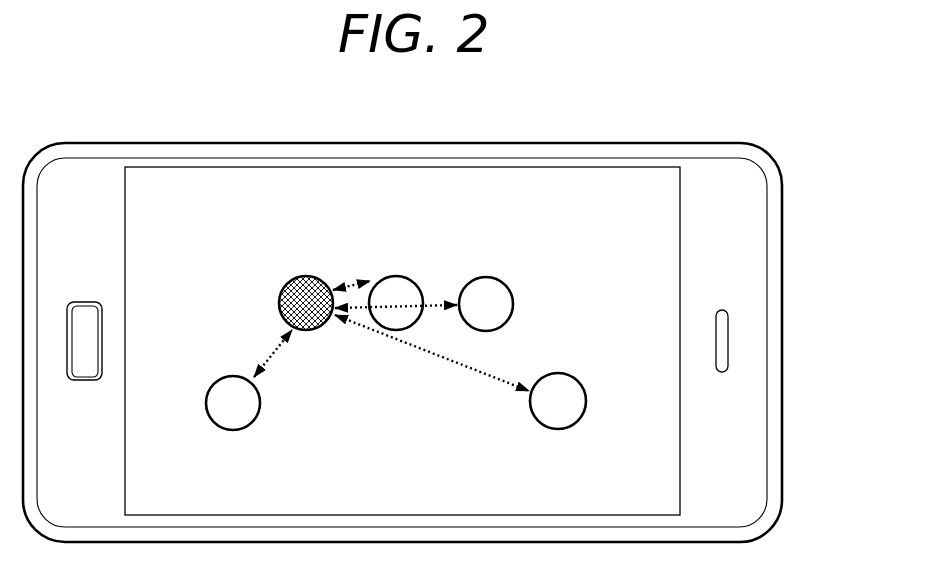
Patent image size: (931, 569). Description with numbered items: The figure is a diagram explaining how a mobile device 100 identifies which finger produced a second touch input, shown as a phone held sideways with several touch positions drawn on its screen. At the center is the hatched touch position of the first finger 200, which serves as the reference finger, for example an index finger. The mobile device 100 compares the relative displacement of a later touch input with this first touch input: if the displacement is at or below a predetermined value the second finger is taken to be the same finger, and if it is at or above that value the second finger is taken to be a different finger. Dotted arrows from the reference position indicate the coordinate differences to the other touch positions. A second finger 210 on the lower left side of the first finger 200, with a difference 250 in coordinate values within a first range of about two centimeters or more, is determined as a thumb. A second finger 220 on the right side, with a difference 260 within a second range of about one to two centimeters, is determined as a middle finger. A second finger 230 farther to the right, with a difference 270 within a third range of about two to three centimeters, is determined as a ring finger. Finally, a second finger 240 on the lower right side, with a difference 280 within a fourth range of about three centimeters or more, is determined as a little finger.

The mobile device 100 is at (675, 143).
The first finger 200 is at (303, 276).
The second finger 210 is at (215, 380).
The second finger 220 is at (399, 276).
The second finger 230 is at (507, 282).
The second finger 240 is at (572, 375).
The difference in coordinate values 250 is at (275, 355).
The difference in coordinate values 260 is at (352, 284).
The difference in coordinate values 270 is at (430, 300).
The difference in coordinate values 280 is at (437, 358).